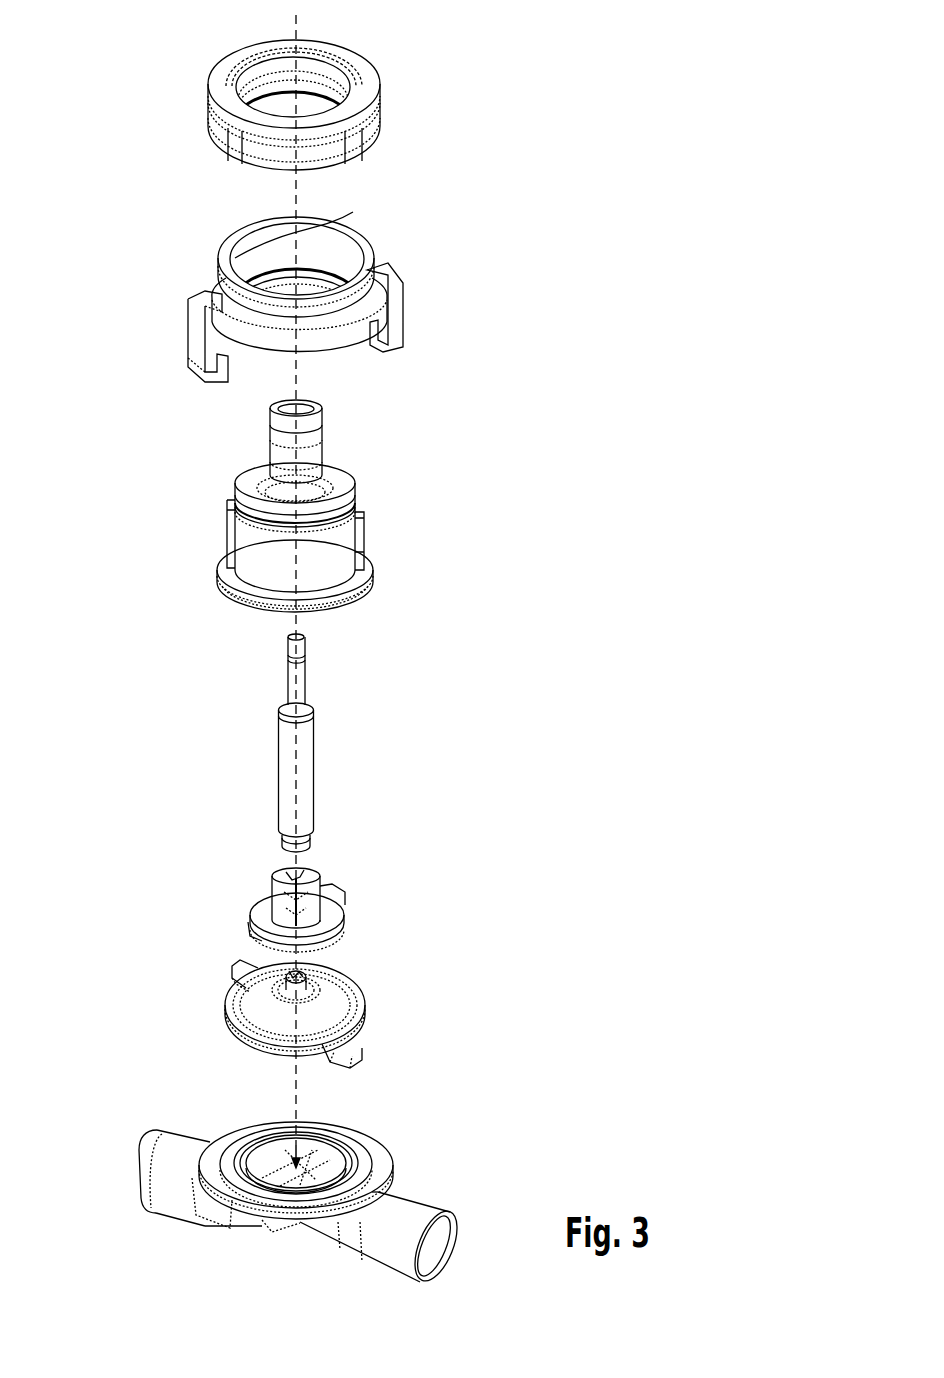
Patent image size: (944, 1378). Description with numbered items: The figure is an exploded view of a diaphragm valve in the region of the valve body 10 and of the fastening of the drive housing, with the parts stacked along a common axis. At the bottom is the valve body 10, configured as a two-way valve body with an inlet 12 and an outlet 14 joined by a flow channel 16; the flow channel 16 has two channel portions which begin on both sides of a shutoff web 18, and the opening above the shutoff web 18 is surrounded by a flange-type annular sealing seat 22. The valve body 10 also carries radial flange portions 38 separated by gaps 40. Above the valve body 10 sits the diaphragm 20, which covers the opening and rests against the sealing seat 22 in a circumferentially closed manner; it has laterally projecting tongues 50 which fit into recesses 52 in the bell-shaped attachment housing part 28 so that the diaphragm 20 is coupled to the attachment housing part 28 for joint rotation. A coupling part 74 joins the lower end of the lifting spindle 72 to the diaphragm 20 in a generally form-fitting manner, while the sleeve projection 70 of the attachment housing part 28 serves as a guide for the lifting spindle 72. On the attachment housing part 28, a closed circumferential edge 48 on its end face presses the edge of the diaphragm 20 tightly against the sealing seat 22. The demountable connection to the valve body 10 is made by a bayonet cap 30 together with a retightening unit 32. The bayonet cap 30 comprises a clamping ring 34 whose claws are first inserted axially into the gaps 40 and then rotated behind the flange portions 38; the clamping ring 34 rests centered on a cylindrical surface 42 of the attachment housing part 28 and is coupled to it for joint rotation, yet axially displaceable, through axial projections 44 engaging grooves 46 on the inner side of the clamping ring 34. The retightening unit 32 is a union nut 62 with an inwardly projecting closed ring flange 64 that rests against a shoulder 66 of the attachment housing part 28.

The valve body 10 is at (291, 1193).
The inlet 12 is at (432, 1262).
The outlet 14 is at (141, 1168).
The flow channel 16 is at (330, 1170).
The shutoff web 18 is at (312, 1160).
The diaphragm 20 is at (327, 1014).
The sealing seat 22 is at (357, 1180).
The attachment housing part 28 is at (297, 530).
The bayonet cap 30 is at (327, 287).
The retightening unit 32 is at (344, 95).
The clamping ring 34 is at (364, 250).
The flange portions 38 is at (235, 1138).
The gaps 40 is at (285, 1122).
The cylindrical surface 42 is at (260, 570).
The axial projections 44 is at (228, 522).
The grooves 46 is at (310, 225).
The circumferential edge 48 is at (357, 598).
The tongues 50 is at (343, 1042).
The recesses 52 is at (335, 604).
The union nut 62 is at (355, 102).
The ring flange 64 is at (340, 63).
The shoulder 66 is at (238, 505).
The sleeve projection 70 is at (312, 432).
The lifting spindle 72 is at (305, 748).
The coupling part 74 is at (330, 922).